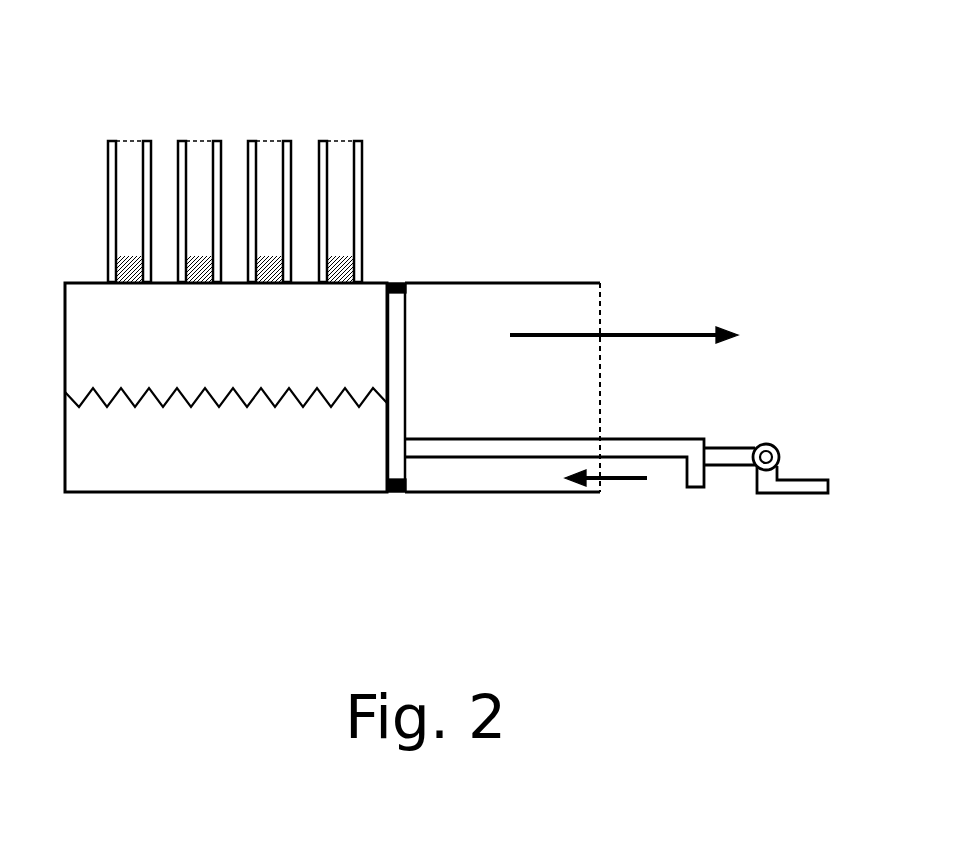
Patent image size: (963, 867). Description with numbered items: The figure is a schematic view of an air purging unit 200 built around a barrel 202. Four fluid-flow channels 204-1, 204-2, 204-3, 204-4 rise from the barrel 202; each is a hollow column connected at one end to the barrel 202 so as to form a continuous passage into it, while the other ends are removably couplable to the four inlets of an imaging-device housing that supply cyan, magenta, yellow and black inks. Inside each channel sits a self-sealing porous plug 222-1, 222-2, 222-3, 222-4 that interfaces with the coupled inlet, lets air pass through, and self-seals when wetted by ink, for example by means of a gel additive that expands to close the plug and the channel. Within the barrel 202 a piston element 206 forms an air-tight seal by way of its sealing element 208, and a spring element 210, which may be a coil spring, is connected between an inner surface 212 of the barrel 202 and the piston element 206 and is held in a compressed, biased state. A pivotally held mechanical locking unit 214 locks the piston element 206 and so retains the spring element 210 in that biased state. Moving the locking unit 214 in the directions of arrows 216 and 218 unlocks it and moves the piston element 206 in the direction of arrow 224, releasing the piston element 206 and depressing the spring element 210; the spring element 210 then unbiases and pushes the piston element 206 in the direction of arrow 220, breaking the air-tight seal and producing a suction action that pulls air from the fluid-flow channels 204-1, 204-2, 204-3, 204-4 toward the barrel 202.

The air purging unit 200 is at (548, 118).
The barrel 202 is at (530, 283).
The fluid-flow channel 204-1 is at (107, 167).
The fluid-flow channel 204-2 is at (222, 152).
The fluid-flow channel 204-3 is at (292, 173).
The fluid-flow channel 204-4 is at (365, 206).
The piston element 206 is at (516, 430).
The sealing element 208 is at (396, 494).
The spring element 210 is at (248, 403).
The inner surface 212 is at (72, 363).
The mechanical locking unit 214 is at (741, 512).
The arrow 216 is at (783, 509).
The arrow 218 is at (722, 478).
The arrow 220 is at (655, 334).
The self-sealing porous plug 222-1 is at (115, 267).
The self-sealing porous plug 222-2 is at (197, 263).
The self-sealing porous plug 222-3 is at (277, 265).
The self-sealing porous plug 222-4 is at (352, 267).
The arrow 224 is at (627, 483).